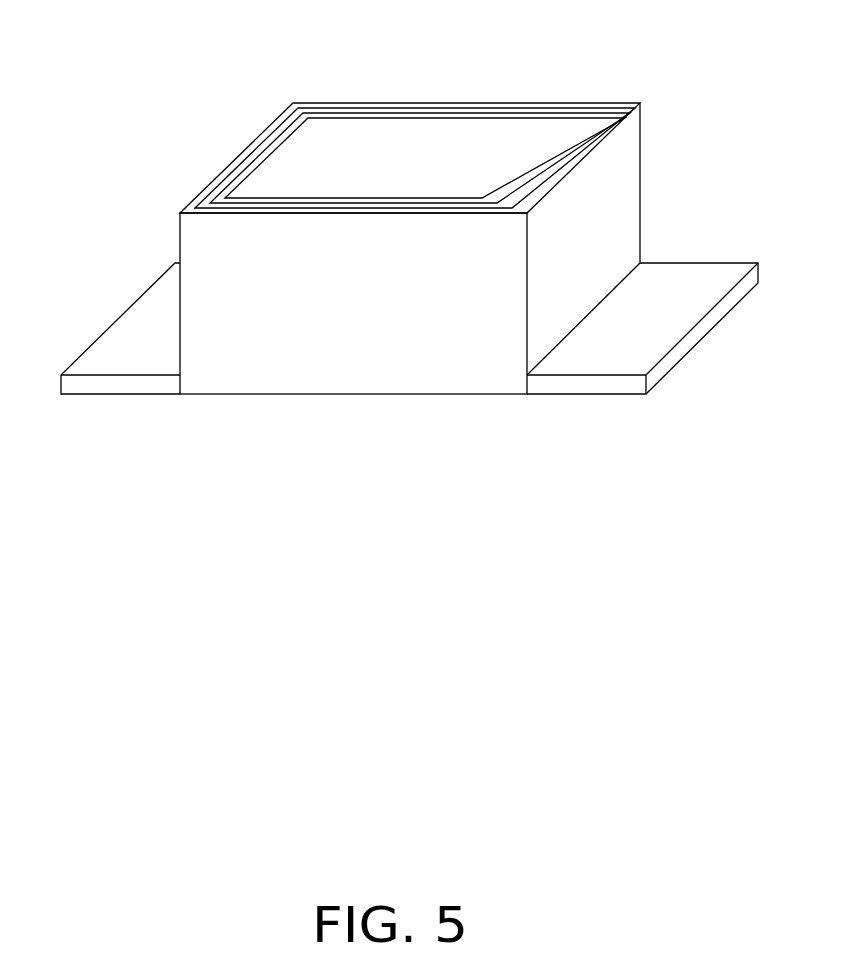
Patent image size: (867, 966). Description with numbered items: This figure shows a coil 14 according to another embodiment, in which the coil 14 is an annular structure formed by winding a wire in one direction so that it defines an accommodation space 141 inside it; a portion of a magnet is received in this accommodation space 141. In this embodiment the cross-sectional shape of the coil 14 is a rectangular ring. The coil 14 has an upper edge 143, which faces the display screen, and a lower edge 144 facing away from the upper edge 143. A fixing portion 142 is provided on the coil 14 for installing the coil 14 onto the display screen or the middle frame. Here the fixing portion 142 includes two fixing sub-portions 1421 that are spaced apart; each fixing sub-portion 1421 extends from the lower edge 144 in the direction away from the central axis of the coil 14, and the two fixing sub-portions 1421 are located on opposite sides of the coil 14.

The coil 14 is at (409, 293).
The accommodation space 141 is at (462, 146).
The upper edge 143 is at (410, 112).
The fixing portion 142 is at (409, 379).
The fixing sub-portion 1421 is at (409, 351).
The lower edge 144 is at (615, 290).